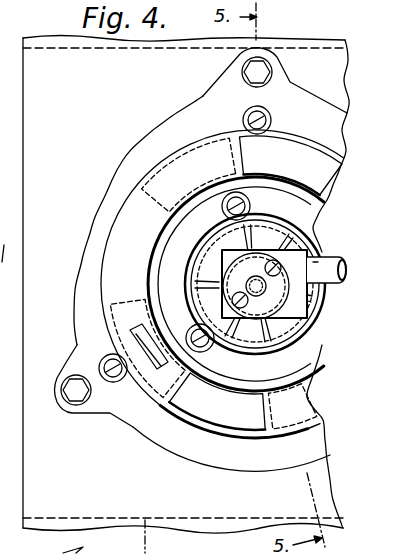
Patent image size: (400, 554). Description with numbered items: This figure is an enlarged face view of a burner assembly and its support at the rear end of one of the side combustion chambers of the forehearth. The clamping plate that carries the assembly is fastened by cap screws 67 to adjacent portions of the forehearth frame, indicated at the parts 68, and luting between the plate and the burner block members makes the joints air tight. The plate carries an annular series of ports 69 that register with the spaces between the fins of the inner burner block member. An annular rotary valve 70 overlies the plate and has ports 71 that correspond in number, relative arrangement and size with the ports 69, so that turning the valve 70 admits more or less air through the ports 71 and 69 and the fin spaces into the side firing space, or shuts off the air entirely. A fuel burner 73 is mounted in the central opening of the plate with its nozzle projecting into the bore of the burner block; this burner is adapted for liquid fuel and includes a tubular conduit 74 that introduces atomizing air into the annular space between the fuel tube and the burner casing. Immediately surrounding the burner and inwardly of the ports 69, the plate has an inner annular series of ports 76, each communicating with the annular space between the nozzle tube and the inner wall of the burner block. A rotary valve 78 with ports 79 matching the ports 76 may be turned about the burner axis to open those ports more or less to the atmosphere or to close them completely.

The cap screws 67 is at (262, 75).
The parts of the forehearth frame 68 is at (201, 260).
The ports 69 is at (200, 134).
The annular rotary valve 70 is at (140, 189).
The ports 71 is at (119, 238).
The fuel burner 73 is at (272, 298).
The tubular conduit 74 is at (327, 261).
The ports 76 is at (275, 200).
The rotary valve 78 is at (204, 247).
The ports 79 is at (200, 272).